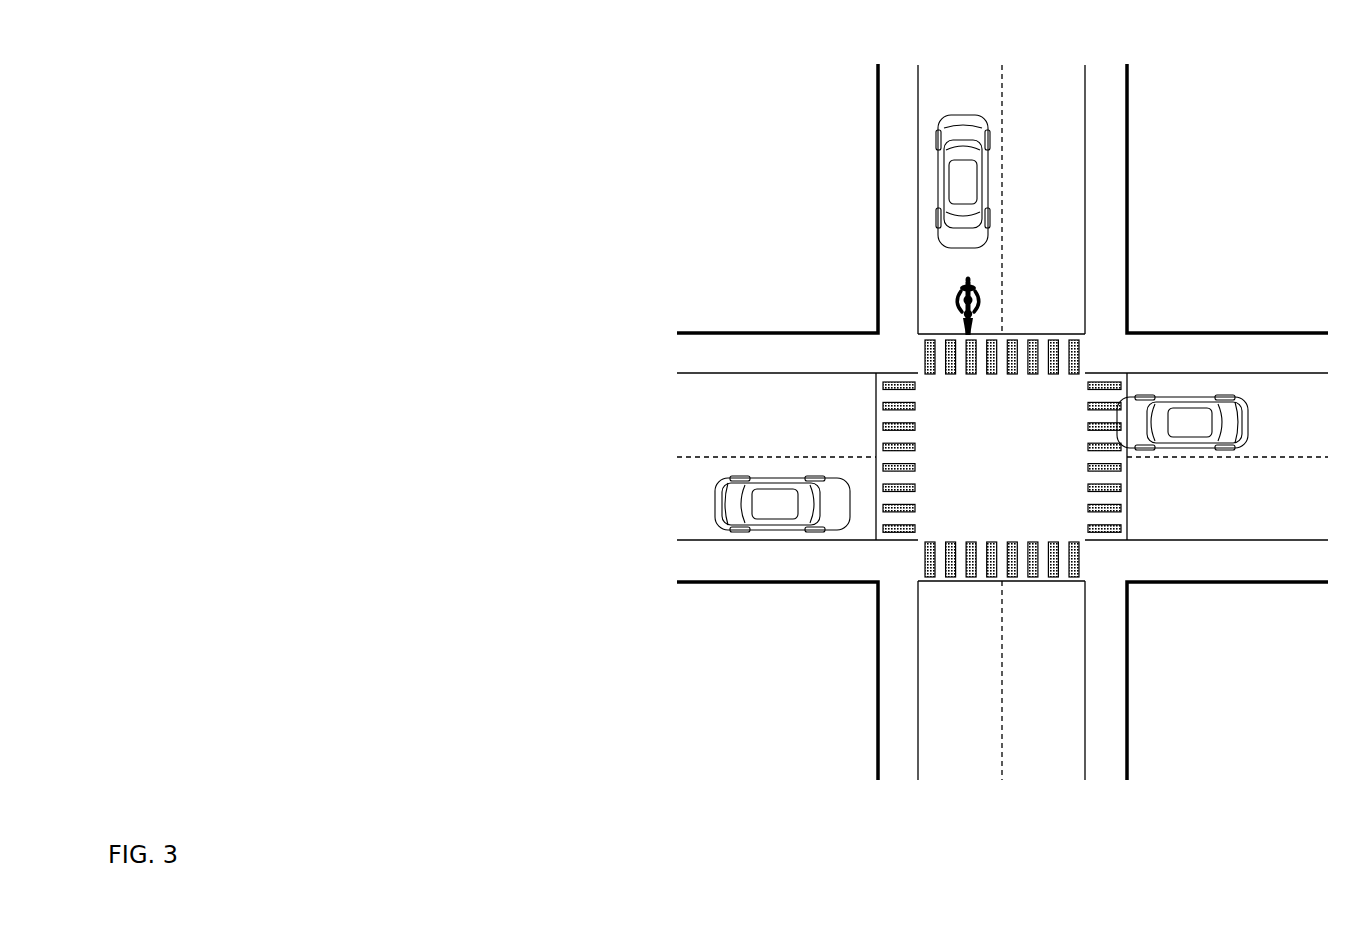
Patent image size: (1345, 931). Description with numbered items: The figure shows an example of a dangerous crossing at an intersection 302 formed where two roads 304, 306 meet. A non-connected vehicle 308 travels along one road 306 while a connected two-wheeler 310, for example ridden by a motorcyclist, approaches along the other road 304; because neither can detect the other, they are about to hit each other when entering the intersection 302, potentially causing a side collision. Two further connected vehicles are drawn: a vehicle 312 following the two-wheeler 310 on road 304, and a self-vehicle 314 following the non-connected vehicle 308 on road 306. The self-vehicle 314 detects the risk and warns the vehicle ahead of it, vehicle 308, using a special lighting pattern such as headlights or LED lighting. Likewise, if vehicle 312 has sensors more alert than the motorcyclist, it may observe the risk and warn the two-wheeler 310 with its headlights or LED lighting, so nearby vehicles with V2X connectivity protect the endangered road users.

The intersection 302 is at (1001, 457).
The road 304 is at (1002, 393).
The road 306 is at (1002, 456).
The non-connected vehicle 308 is at (1182, 458).
The connected two-wheeler 310 is at (1018, 294).
The vehicle 312 is at (1004, 181).
The self-vehicle 314 is at (782, 466).